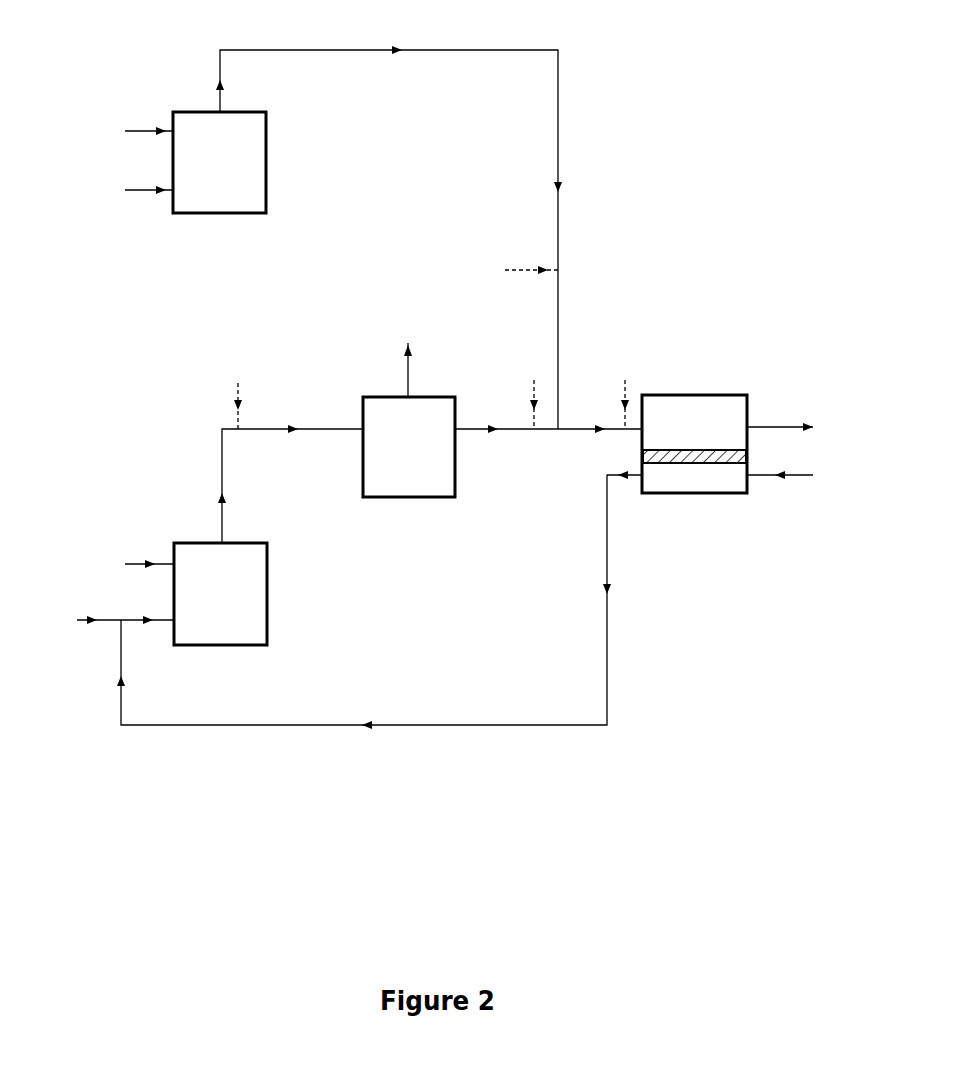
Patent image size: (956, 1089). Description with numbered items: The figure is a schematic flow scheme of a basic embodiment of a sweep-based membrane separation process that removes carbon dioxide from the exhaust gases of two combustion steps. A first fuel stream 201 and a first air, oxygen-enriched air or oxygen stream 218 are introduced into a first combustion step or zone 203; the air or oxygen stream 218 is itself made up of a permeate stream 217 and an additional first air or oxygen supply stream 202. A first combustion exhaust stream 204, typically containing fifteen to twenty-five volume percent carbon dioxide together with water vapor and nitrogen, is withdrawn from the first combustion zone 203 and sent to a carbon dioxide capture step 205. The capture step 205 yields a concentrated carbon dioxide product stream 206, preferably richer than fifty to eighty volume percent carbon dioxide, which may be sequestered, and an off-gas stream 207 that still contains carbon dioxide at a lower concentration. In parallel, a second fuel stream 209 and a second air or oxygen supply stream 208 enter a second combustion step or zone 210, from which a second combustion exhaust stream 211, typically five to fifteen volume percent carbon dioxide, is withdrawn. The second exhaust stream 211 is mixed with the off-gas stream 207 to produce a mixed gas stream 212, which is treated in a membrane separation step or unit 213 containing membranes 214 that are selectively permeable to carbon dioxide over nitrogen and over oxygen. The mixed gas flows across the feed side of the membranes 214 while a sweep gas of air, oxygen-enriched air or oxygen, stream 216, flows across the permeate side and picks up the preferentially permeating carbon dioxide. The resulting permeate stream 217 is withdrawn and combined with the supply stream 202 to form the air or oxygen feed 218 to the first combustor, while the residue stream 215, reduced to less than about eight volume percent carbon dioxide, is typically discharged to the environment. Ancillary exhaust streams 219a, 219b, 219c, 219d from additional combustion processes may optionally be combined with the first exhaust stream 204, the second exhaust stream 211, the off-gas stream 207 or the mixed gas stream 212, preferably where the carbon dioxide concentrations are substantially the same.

The first fuel stream 201 is at (128, 563).
The first air or oxygen supply stream 202 is at (77, 619).
The first combustion step or zone 203 is at (267, 601).
The first combustion exhaust stream 204 is at (262, 484).
The carbon dioxide capture step 205 is at (422, 497).
The concentrated carbon dioxide product stream 206 is at (409, 357).
The off-gas stream 207 is at (506, 416).
The second air or oxygen supply stream 208 is at (126, 189).
The second fuel stream 209 is at (126, 130).
The second combustion step or zone 210 is at (266, 170).
The second combustion exhaust stream 211 is at (389, 224).
The mixed gas stream 212 is at (600, 416).
The membrane separation step or unit 213 is at (700, 395).
The membranes 214 is at (642, 458).
The residue stream 215 is at (803, 426).
The sweep gas stream 216 is at (803, 474).
The permeate stream 217 is at (379, 614).
The first air, oxygen-enriched air or oxygen stream 218 is at (147, 606).
The ancillary exhaust stream 219a is at (247, 388).
The ancillary exhaust stream 219b is at (503, 269).
The ancillary exhaust stream 219c is at (523, 389).
The ancillary exhaust stream 219d is at (621, 389).